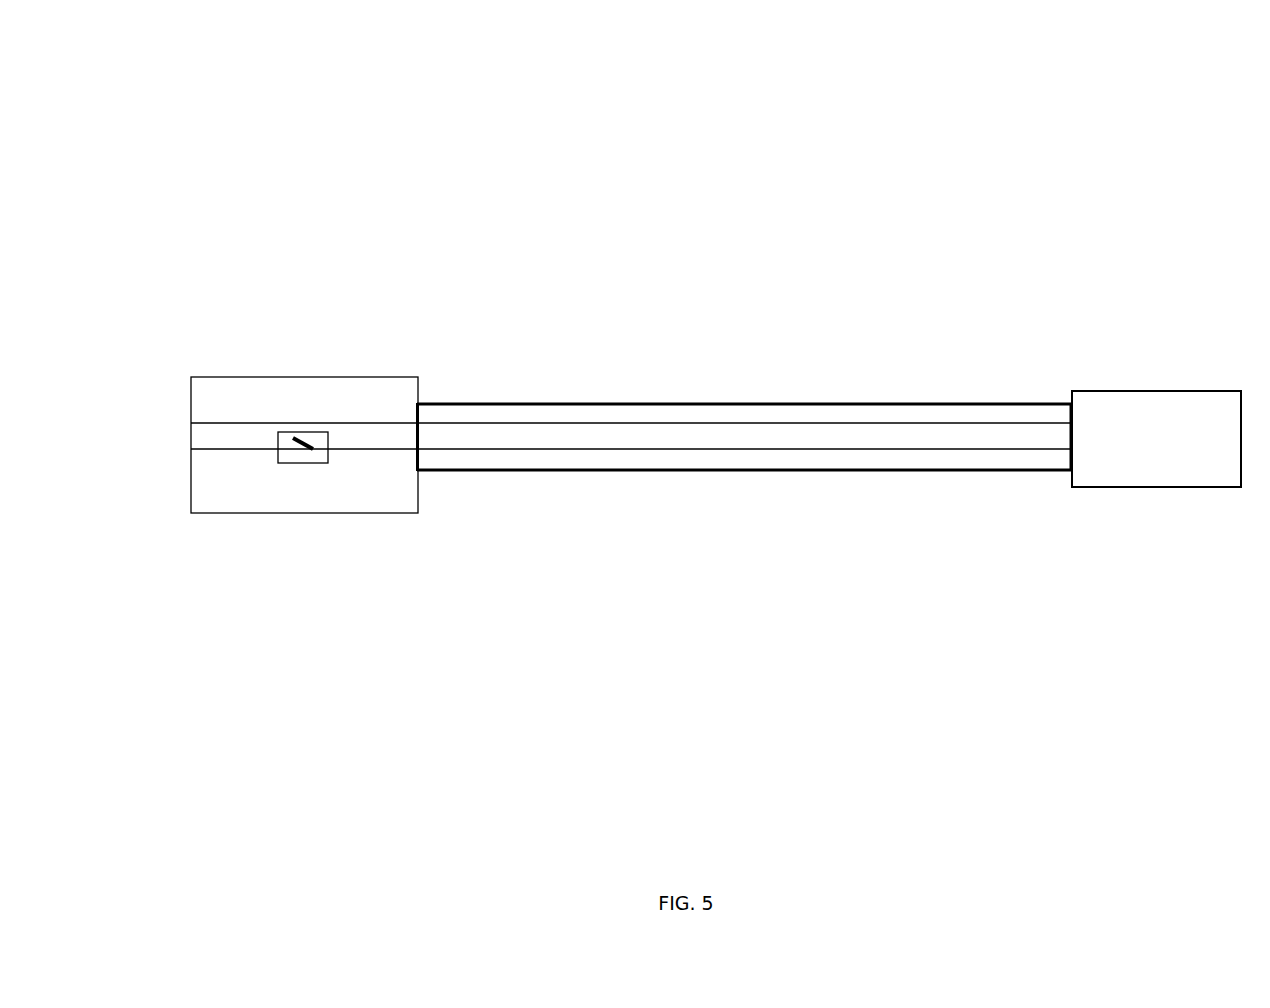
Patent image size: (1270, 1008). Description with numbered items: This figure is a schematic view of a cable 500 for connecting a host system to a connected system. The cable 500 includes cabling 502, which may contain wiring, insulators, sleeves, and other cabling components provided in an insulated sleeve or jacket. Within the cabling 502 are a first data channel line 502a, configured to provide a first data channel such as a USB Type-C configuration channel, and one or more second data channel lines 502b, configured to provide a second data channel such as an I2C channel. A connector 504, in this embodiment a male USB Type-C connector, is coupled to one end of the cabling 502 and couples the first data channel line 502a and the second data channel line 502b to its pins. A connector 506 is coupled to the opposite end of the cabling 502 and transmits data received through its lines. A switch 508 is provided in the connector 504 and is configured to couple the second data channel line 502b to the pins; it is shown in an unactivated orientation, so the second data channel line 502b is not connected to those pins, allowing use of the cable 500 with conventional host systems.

The cable 500 is at (152, 98).
The cabling 502 is at (745, 403).
The first data channel line 502a is at (863, 424).
The second data channel line 502b is at (822, 450).
The connector 504 is at (383, 506).
The connector 506 is at (1140, 462).
The switch 508 is at (303, 435).